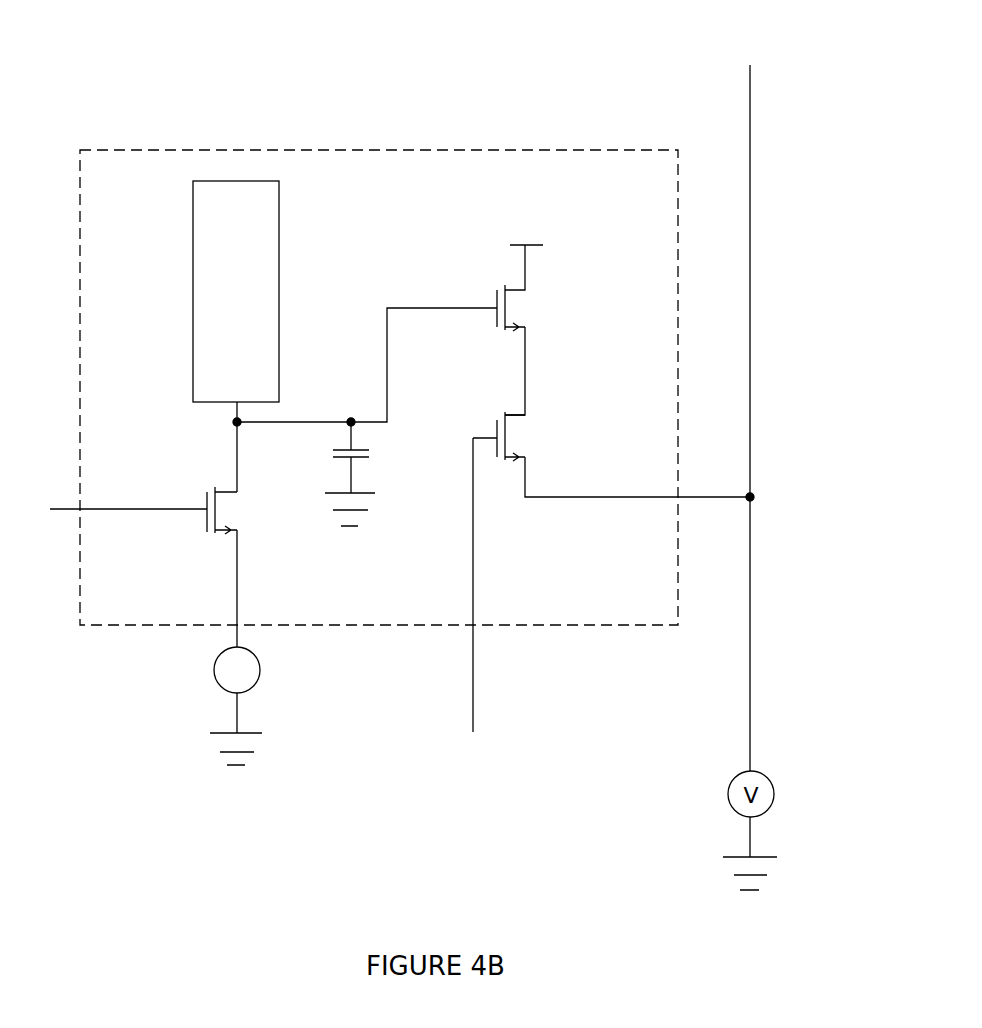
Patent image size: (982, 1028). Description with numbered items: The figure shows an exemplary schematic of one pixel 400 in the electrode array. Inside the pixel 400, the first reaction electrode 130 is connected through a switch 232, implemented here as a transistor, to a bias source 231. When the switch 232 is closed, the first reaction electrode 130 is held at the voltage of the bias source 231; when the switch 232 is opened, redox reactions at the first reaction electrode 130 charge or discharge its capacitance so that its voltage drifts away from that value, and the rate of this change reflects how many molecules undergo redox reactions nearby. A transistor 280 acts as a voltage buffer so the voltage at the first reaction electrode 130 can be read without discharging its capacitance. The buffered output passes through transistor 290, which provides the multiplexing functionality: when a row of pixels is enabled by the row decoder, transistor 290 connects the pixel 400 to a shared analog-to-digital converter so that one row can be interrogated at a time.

The pixel 400 is at (528, 146).
The first reaction electrode 130 is at (244, 216).
The transistor 280 is at (495, 282).
The transistor 290 is at (508, 443).
The switch 232 is at (204, 534).
The bias source 231 is at (262, 664).